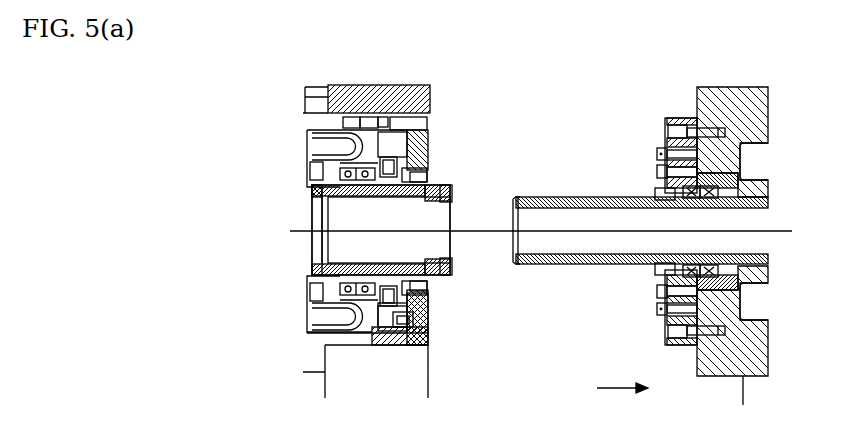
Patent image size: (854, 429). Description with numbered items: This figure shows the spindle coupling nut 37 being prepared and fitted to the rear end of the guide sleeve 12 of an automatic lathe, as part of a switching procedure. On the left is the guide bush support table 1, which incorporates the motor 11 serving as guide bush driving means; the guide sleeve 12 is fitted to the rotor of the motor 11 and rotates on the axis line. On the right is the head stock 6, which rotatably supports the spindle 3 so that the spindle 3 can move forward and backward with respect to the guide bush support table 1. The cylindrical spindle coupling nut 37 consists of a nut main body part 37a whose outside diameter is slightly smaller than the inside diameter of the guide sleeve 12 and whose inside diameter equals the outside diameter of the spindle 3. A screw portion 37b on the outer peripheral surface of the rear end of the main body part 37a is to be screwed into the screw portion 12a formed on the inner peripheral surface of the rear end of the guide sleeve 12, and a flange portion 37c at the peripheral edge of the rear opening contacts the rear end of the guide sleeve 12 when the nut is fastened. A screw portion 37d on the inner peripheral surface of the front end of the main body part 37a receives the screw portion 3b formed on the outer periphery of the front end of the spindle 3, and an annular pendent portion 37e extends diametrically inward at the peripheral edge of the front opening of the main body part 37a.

The guide bush support table 1 is at (455, 98).
The motor 11 is at (358, 117).
The guide sleeve 12 is at (312, 187).
The screw portion 12a is at (450, 203).
The spindle coupling nut 37 is at (446, 286).
The nut main body part 37a is at (357, 200).
The screw portion 37b is at (440, 181).
The flange portion 37c is at (455, 271).
The screw portion 37d is at (333, 258).
The annular pendent portion 37e is at (312, 259).
The spindle 3 is at (640, 188).
The screw portion 3b is at (523, 266).
The head stock 6 is at (680, 98).